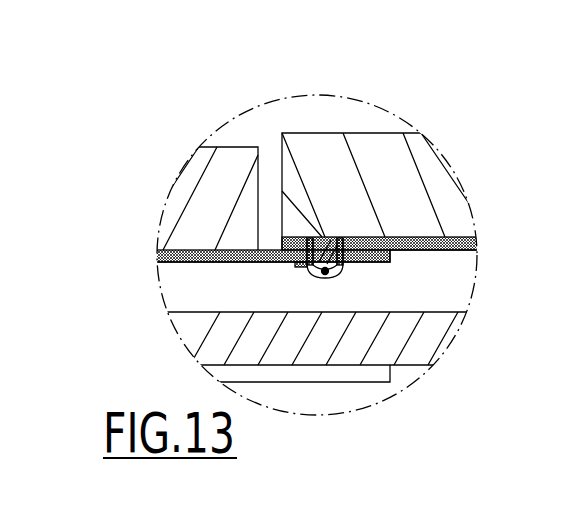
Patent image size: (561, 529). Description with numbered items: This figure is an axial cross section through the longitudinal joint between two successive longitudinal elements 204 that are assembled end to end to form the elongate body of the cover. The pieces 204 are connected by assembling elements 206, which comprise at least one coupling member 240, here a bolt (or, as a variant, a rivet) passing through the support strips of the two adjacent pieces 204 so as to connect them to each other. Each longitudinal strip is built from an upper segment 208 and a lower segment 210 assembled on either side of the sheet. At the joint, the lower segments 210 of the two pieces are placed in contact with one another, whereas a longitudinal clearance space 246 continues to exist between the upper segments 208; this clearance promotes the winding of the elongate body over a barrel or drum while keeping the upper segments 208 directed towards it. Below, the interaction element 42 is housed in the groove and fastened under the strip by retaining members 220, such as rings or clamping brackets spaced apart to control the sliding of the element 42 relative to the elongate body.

The longitudinal element 204 is at (178, 140).
The assembling element 206 is at (237, 128).
The upper segment 208 is at (443, 207).
The lower segment 210 is at (178, 292).
The retaining member 220 is at (352, 380).
The coupling member 240 is at (298, 263).
The longitudinal clearance space 246 is at (268, 160).
The interaction element 42 is at (442, 355).